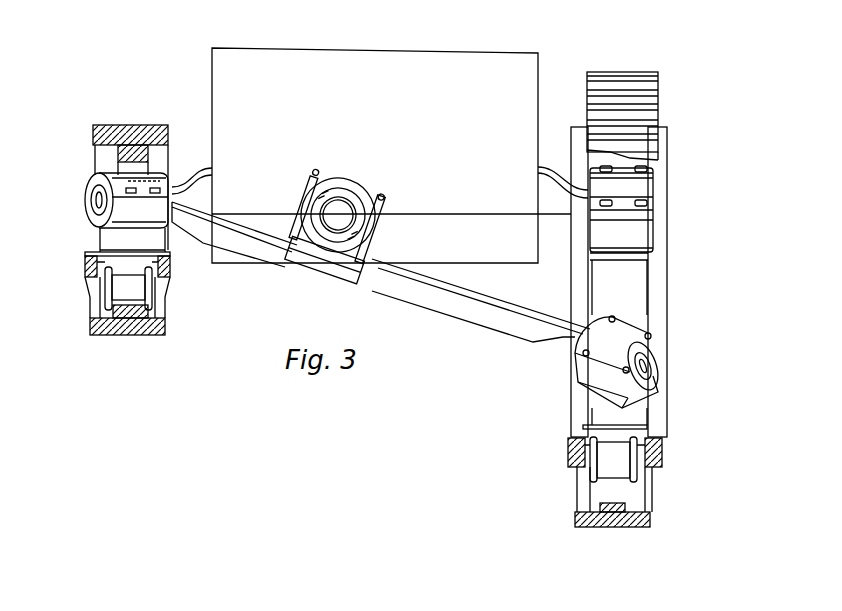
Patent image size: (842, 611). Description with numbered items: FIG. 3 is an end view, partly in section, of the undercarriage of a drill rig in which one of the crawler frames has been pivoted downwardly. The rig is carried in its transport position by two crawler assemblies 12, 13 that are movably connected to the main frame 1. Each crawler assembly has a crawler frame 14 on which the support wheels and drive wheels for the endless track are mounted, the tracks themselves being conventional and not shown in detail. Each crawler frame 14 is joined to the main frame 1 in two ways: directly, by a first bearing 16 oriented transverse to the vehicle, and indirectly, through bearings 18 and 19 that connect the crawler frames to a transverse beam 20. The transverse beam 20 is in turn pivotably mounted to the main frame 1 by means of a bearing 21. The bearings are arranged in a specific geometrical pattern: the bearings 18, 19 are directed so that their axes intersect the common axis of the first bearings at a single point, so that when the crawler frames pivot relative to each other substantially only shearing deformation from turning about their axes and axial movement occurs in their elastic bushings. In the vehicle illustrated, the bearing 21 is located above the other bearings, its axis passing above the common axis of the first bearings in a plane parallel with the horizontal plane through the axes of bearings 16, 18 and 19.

The main frame 1 is at (225, 80).
The crawler assembly 12 is at (672, 260).
The crawler assembly 13 is at (95, 156).
The crawler frame 14 is at (87, 260).
The first bearing 16 is at (660, 208).
The bearing 18 is at (674, 360).
The bearing 19 is at (82, 199).
The transverse beam 20 is at (468, 312).
The bearing 21 is at (374, 184).